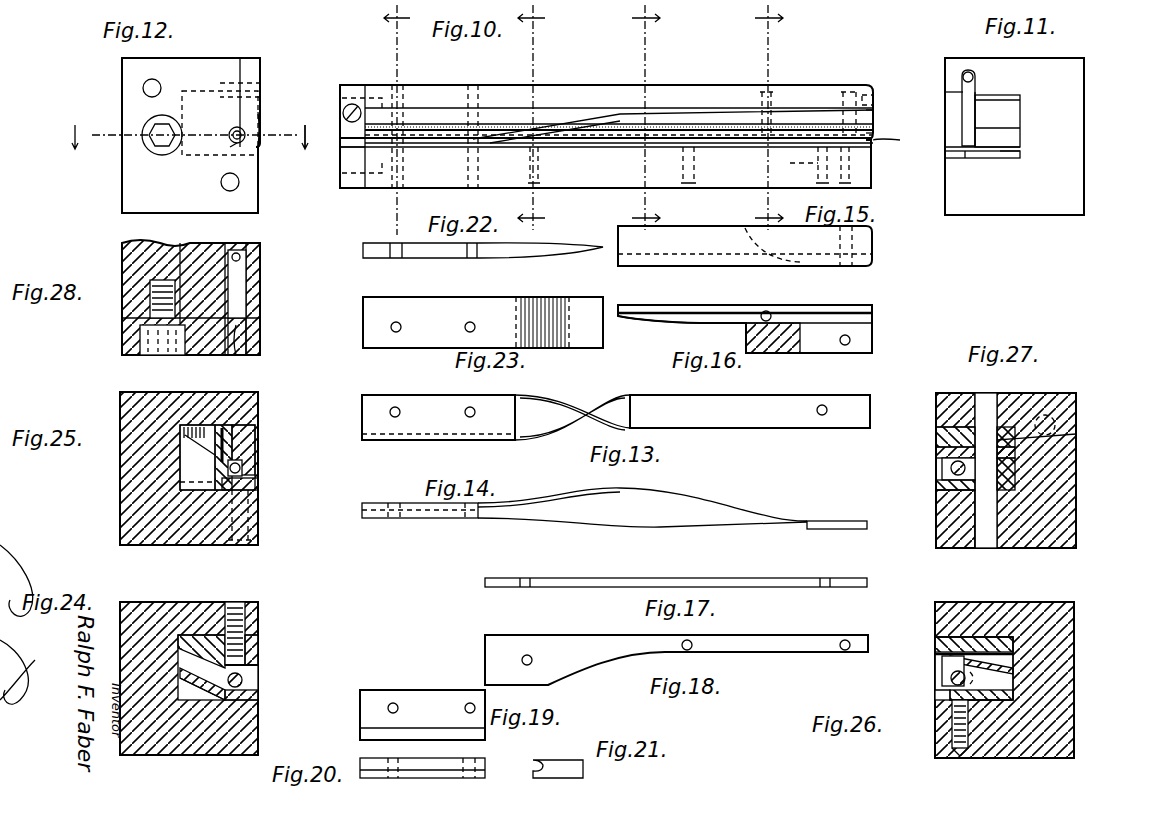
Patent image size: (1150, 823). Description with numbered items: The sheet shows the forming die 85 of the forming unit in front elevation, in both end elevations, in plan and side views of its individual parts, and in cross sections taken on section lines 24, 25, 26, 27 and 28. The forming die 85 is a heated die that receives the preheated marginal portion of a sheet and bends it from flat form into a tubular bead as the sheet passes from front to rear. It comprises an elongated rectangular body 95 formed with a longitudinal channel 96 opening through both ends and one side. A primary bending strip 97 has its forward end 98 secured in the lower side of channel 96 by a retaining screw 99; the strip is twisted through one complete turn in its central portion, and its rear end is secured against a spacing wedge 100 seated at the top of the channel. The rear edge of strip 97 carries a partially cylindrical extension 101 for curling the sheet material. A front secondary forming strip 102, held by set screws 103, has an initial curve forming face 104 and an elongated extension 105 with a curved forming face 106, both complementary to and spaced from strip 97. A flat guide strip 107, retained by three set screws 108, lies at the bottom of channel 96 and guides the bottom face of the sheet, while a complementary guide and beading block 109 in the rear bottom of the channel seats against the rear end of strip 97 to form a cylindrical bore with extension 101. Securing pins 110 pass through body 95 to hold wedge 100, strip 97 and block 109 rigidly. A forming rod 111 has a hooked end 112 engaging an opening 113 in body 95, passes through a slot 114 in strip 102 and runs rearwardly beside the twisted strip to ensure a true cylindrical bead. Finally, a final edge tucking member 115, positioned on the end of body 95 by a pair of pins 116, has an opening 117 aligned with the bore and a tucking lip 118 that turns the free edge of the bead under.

In FIG. 12, the forming die 85 is at (115, 104).
In FIG. 10, the forming die 85 is at (706, 82).
In FIG. 11, the forming die 85 is at (1039, 219).
In FIG. 28, the forming die 85 is at (118, 314).
In FIG. 25, the forming die 85 is at (116, 453).
In FIG. 24, the forming die 85 is at (187, 596).
In FIG. 27, the forming die 85 is at (1064, 390).
In FIG. 26, the forming die 85 is at (1062, 597).
In FIG. 12, the elongated rectangular body 95 is at (126, 72).
In FIG. 10, the elongated rectangular body 95 is at (560, 98).
In FIG. 11, the elongated rectangular body 95 is at (1058, 64).
In FIG. 28, the elongated rectangular body 95 is at (128, 262).
In FIG. 25, the elongated rectangular body 95 is at (134, 392).
In FIG. 24, the elongated rectangular body 95 is at (146, 603).
In FIG. 27, the elongated rectangular body 95 is at (1018, 400).
In FIG. 26, the elongated rectangular body 95 is at (1008, 612).
In FIG. 11, the longitudinal channel 96 is at (1029, 96).
In FIG. 28, the longitudinal channel 96 is at (185, 262).
In FIG. 25, the longitudinal channel 96 is at (192, 428).
In FIG. 24, the longitudinal channel 96 is at (204, 632).
In FIG. 27, the longitudinal channel 96 is at (958, 498).
In FIG. 26, the longitudinal channel 96 is at (950, 634).
In FIG. 10, the primary bending strip 97 is at (612, 110).
In FIG. 13, the primary bending strip 97 is at (640, 405).
In FIG. 14, the primary bending strip 97 is at (722, 508).
In FIG. 11, the primary bending strip 97 is at (1008, 158).
In FIG. 28, the primary bending strip 97 is at (262, 244).
In FIG. 25, the primary bending strip 97 is at (258, 437).
In FIG. 24, the primary bending strip 97 is at (215, 705).
In FIG. 27, the primary bending strip 97 is at (1076, 435).
In FIG. 26, the primary bending strip 97 is at (1013, 670).
In FIG. 10, the forward end of primary bending strip 98 is at (814, 104).
In FIG. 13, the forward end of primary bending strip 98 is at (858, 408).
In FIG. 14, the forward end of primary bending strip 98 is at (845, 520).
In FIG. 10, the retaining screw 99 is at (793, 164).
In FIG. 10, the spacing wedge 100 is at (490, 118).
In FIG. 22, the spacing wedge 100 is at (538, 250).
In FIG. 23, the spacing wedge 100 is at (540, 308).
In FIG. 27, the spacing wedge 100 is at (938, 438).
In FIG. 26, the spacing wedge 100 is at (940, 647).
In FIG. 12, the extension 101 is at (258, 122).
In FIG. 10, the extension 101 is at (415, 135).
In FIG. 13, the extension 101 is at (390, 437).
In FIG. 14, the extension 101 is at (390, 520).
In FIG. 28, the extension 101 is at (248, 292).
In FIG. 27, the extension 101 is at (942, 462).
In FIG. 26, the extension 101 is at (945, 674).
In FIG. 10, the front secondary forming strip 102 is at (866, 123).
In FIG. 15, the front secondary forming strip 102 is at (873, 254).
In FIG. 16, the front secondary forming strip 102 is at (858, 340).
In FIG. 11, the front secondary forming strip 102 is at (1000, 122).
In FIG. 25, the front secondary forming strip 102 is at (255, 458).
In FIG. 24, the front secondary forming strip 102 is at (258, 640).
In FIG. 10, the set screws 103 is at (770, 90).
In FIG. 24, the set screws 103 is at (246, 616).
In FIG. 10, the initial curve forming face 104 is at (745, 200).
In FIG. 16, the initial curve forming face 104 is at (785, 340).
In FIG. 24, the initial curve forming face 104 is at (200, 670).
In FIG. 15, the elongated extension 105 is at (635, 258).
In FIG. 16, the elongated extension 105 is at (638, 310).
In FIG. 16, the curved forming face 106 is at (630, 320).
In FIG. 25, the curved forming face 106 is at (252, 427).
In FIG. 17, the flat guide strip 107 is at (822, 575).
In FIG. 18, the flat guide strip 107 is at (790, 642).
In FIG. 11, the flat guide strip 107 is at (958, 160).
In FIG. 25, the flat guide strip 107 is at (258, 488).
In FIG. 24, the flat guide strip 107 is at (258, 695).
In FIG. 27, the flat guide strip 107 is at (975, 474).
In FIG. 26, the flat guide strip 107 is at (947, 700).
In FIG. 10, the set screws 108 is at (538, 186).
In FIG. 25, the set screws 108 is at (250, 528).
In FIG. 26, the set screws 108 is at (950, 745).
In FIG. 10, the complementary guide and beading block 109 is at (365, 143).
In FIG. 19, the complementary guide and beading block 109 is at (372, 700).
In FIG. 20, the complementary guide and beading block 109 is at (455, 768).
In FIG. 21, the complementary guide and beading block 109 is at (583, 775).
In FIG. 28, the complementary guide and beading block 109 is at (228, 250).
In FIG. 10, the securing pins 110 is at (465, 88).
In FIG. 27, the securing pins 110 is at (980, 398).
In FIG. 12, the forming rod 111 is at (242, 130).
In FIG. 10, the forming rod 111 is at (884, 135).
In FIG. 11, the forming rod 111 is at (986, 112).
In FIG. 28, the forming rod 111 is at (240, 268).
In FIG. 25, the forming rod 111 is at (258, 475).
In FIG. 24, the forming rod 111 is at (243, 680).
In FIG. 27, the forming rod 111 is at (950, 470).
In FIG. 26, the forming rod 111 is at (952, 684).
In FIG. 10, the hooked end 112 is at (876, 98).
In FIG. 11, the hooked end 112 is at (978, 98).
In FIG. 11, the opening 113 is at (970, 63).
In FIG. 16, the slot 114 is at (800, 318).
In FIG. 11, the slot 114 is at (1000, 127).
In FIG. 25, the slot 114 is at (240, 448).
In FIG. 24, the slot 114 is at (240, 668).
In FIG. 12, the final edge tucking member 115 is at (132, 178).
In FIG. 10, the final edge tucking member 115 is at (350, 92).
In FIG. 28, the final edge tucking member 115 is at (130, 340).
In FIG. 12, the pins 116 is at (155, 86).
In FIG. 10, the pins 116 is at (372, 90).
In FIG. 12, the opening 117 is at (237, 128).
In FIG. 28, the opening 117 is at (228, 335).
In FIG. 12, the tucking lip 118 is at (237, 144).
In FIG. 28, the tucking lip 118 is at (240, 340).
In FIG. 10, the section line 24— 24 is at (756, 117).
In FIG. 10, the section line 25— 25 is at (634, 117).
In FIG. 10, the section line 26— 26 is at (543, 117).
In FIG. 10, the section line 27— 27 is at (398, 120).
In FIG. 12, the section line 28— 28 is at (181, 137).
In FIG. 10, the section line 28— 28 is at (319, 136).